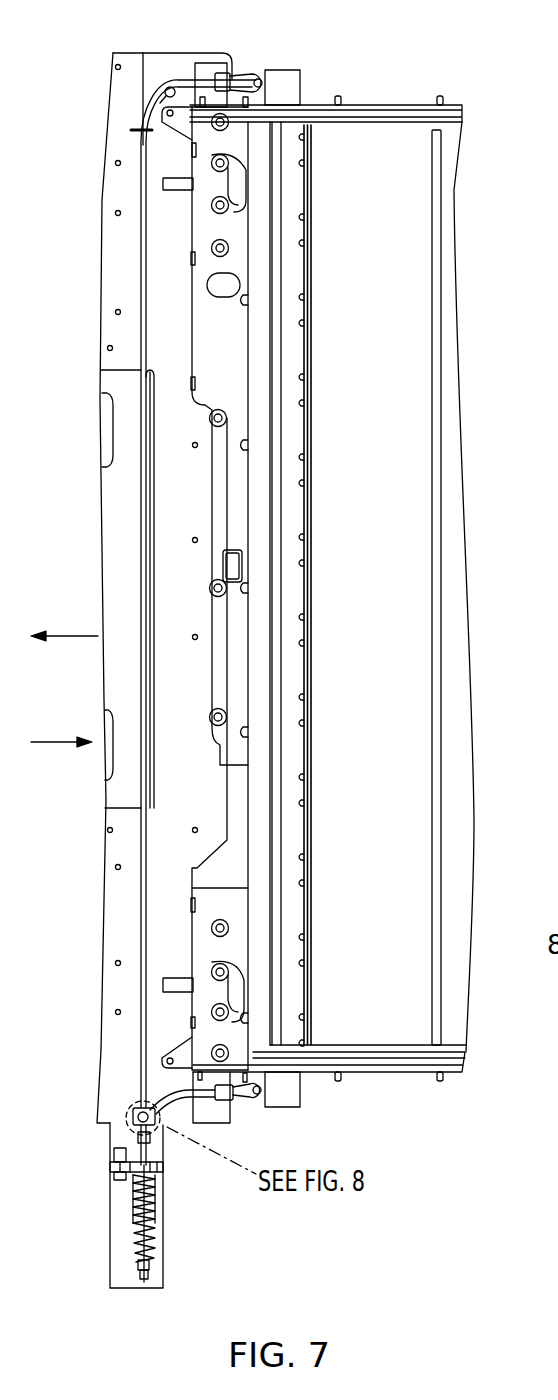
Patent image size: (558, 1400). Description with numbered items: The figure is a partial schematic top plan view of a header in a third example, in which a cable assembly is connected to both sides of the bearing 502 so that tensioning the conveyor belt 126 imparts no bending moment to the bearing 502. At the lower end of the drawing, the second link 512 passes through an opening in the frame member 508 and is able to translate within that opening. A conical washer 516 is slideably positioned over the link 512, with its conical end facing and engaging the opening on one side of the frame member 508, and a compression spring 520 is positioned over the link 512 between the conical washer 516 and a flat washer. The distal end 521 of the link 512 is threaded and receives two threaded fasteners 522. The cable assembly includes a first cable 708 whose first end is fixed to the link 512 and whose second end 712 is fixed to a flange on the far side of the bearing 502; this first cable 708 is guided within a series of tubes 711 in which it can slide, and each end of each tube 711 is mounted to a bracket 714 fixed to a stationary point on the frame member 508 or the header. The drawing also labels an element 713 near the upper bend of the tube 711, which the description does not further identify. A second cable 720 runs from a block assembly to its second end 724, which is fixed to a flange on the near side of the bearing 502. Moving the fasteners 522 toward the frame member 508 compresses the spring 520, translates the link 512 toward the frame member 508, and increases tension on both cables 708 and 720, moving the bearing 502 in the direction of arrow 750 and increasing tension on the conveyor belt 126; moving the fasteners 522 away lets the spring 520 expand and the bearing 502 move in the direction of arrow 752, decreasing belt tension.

The conveyor belt 126 is at (440, 732).
The bearing 502 is at (280, 68).
The frame member 508 is at (160, 1163).
The second link 512 is at (141, 1152).
The conical washer 516 is at (157, 1183).
The compression spring 520 is at (152, 1228).
The distal end 521 is at (150, 1277).
The threaded fasteners 522 is at (148, 1263).
The first cable 708 is at (137, 147).
The tubes 711 is at (150, 96).
The second end 712 is at (247, 82).
The pivot pin 713 is at (180, 83).
The bracket 714 is at (145, 130).
The second cable 720 is at (168, 1105).
The second end 724 is at (240, 1098).
The arrow 750 is at (64, 636).
The arrow 752 is at (52, 742).